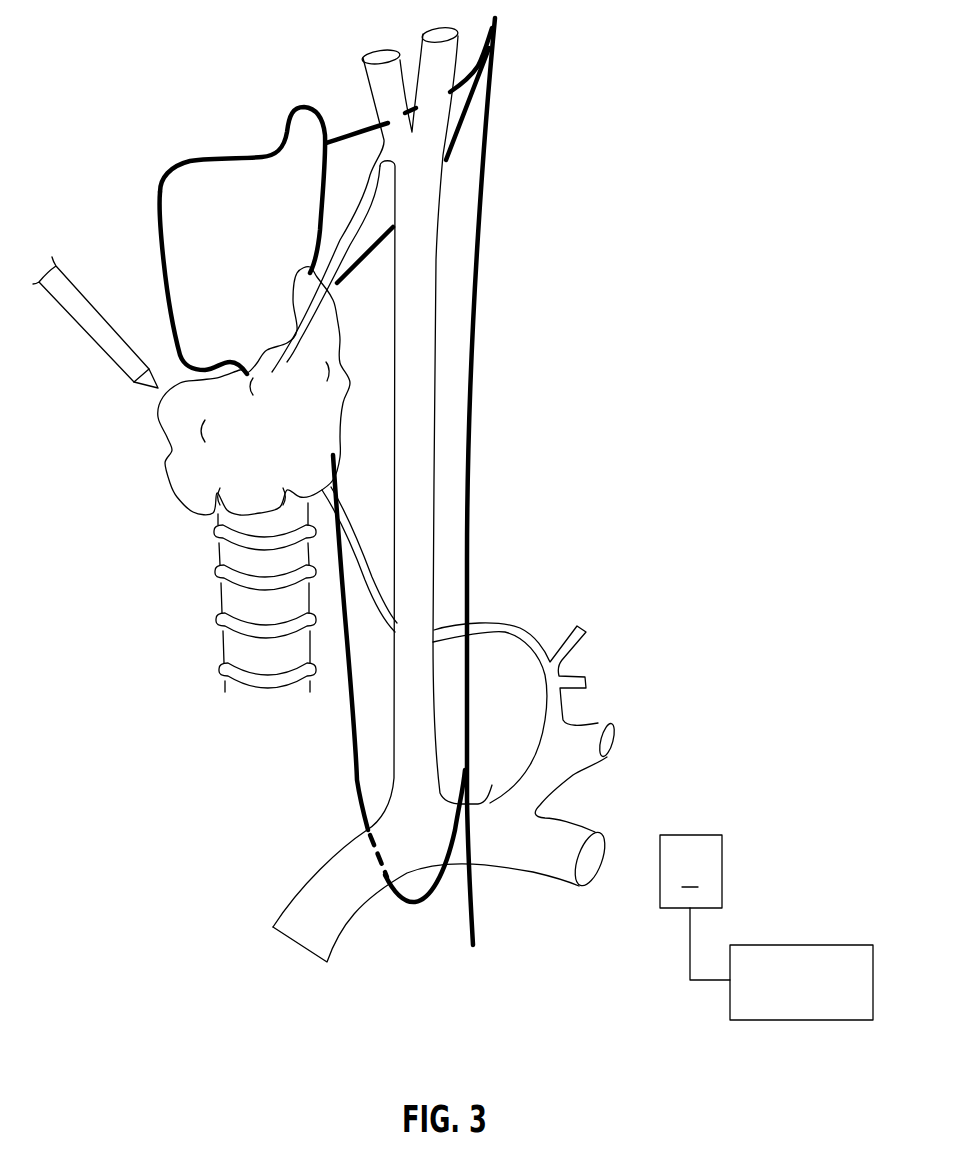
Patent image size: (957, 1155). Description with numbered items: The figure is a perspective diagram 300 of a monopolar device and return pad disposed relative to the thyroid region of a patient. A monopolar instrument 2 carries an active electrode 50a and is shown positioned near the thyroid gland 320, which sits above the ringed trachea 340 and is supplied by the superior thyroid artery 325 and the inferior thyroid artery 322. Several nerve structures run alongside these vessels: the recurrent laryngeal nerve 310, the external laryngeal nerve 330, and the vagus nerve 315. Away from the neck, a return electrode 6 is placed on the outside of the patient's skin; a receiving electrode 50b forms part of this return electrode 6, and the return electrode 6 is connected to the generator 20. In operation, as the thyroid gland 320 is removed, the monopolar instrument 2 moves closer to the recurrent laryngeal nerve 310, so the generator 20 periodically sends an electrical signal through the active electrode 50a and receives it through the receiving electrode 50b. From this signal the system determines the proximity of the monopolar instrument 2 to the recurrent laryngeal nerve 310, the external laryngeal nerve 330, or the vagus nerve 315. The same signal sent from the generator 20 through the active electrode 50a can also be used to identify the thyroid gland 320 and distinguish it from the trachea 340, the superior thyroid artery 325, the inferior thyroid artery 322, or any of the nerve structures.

The diagram 300 is at (679, 144).
The monopolar instrument 2 is at (95, 337).
The active electrode 50a is at (143, 383).
The receiving electrode 50b is at (709, 855).
The return electrode 6 is at (691, 835).
The generator 20 is at (803, 945).
The recurrent laryngeal nerve 310 is at (337, 483).
The vagus nerve 315 is at (472, 360).
The thyroid gland 320 is at (168, 477).
The inferior thyroid artery 322 is at (508, 623).
The superior thyroid artery 325 is at (353, 220).
The external laryngeal nerve 330 is at (377, 250).
The trachea 340 is at (233, 643).